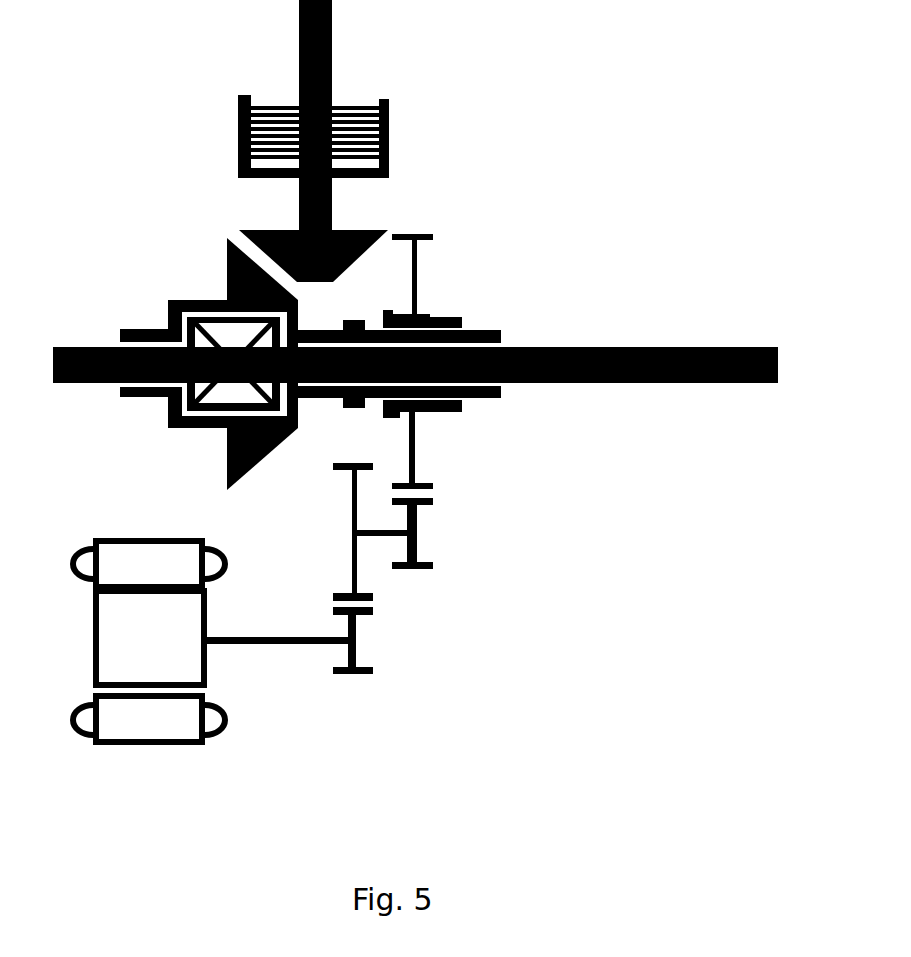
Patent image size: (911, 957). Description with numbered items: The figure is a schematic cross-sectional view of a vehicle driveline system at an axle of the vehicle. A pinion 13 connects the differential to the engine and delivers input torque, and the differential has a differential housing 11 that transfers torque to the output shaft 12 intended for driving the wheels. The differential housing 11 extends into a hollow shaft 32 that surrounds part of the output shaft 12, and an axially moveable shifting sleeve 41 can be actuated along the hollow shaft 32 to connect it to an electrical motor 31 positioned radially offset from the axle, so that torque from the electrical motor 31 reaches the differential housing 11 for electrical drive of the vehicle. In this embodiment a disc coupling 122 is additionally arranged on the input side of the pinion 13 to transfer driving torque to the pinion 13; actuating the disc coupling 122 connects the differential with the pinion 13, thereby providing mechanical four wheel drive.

The differential housing 11 is at (227, 428).
The output shaft 12 is at (548, 347).
The pinion 13 is at (260, 230).
The electrical motor 31 is at (113, 537).
The hollow shaft 32 is at (443, 408).
The shifting sleeve 41 is at (430, 317).
The disc coupling 122 is at (389, 136).